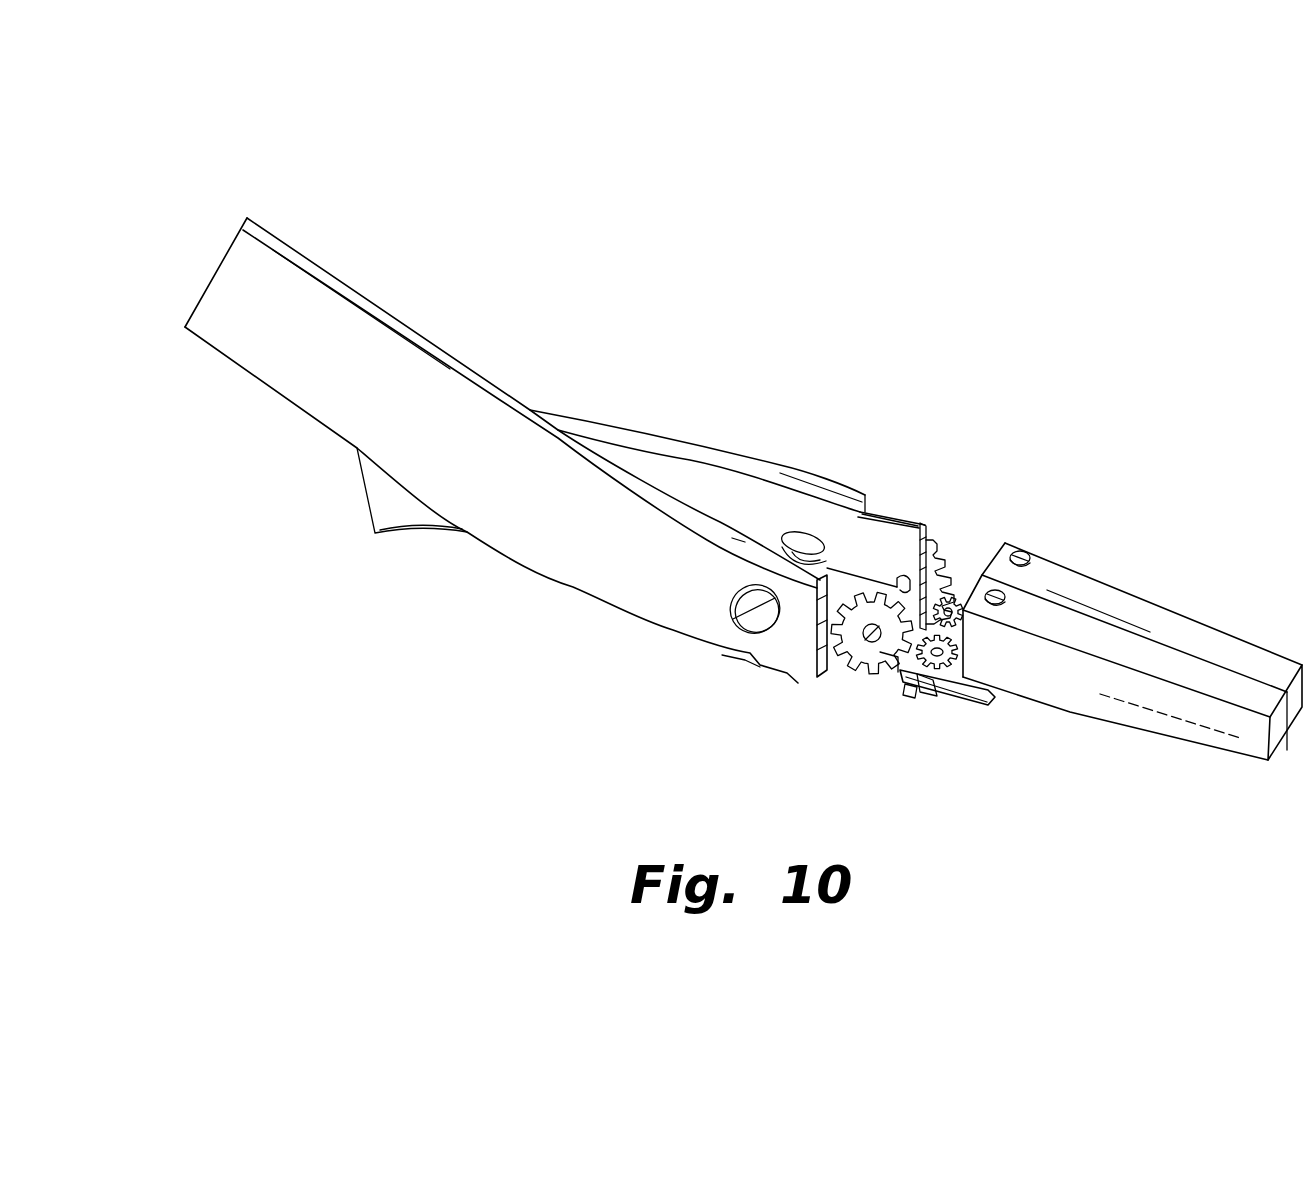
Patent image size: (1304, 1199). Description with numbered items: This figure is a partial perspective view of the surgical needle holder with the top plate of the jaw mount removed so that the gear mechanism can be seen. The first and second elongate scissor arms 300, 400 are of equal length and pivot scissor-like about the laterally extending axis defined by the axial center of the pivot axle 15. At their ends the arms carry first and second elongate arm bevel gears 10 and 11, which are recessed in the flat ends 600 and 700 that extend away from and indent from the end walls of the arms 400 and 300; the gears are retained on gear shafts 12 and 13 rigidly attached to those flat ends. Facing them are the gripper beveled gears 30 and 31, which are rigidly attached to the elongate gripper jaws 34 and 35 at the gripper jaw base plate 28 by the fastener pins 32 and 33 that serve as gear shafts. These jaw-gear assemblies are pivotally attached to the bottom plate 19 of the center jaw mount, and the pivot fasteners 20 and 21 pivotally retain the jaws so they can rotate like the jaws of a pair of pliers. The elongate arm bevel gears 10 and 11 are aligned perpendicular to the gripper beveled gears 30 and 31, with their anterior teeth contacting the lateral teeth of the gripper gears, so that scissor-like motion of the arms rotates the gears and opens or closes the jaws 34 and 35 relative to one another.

The first elongate scissor arm 300 is at (645, 437).
The second elongate scissor arm 400 is at (605, 475).
The flat end 700 is at (902, 515).
The pivot axle 15 is at (790, 535).
The second elongate arm bevel gear 11 is at (950, 545).
The gear shaft 13 is at (900, 580).
The fastener pin 33 is at (961, 600).
The gripper beveled gear 31 is at (963, 605).
The pivot fastener 21 is at (1025, 556).
The elongate gripper jaw 35 is at (1098, 592).
The elongate gripper jaw 34 is at (1097, 632).
The flat end 600 is at (798, 683).
The gear shaft 12 is at (860, 668).
The first elongate arm bevel gear 10 is at (878, 656).
The gripper beveled gear 30 is at (923, 687).
The bottom plate 19 is at (956, 699).
The fastener pin 32 is at (910, 687).
The gripper jaw base plate 28 is at (938, 698).
The pivot fastener 20 is at (990, 607).